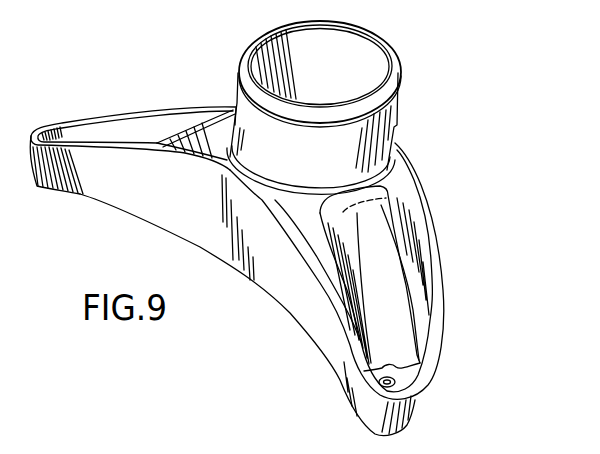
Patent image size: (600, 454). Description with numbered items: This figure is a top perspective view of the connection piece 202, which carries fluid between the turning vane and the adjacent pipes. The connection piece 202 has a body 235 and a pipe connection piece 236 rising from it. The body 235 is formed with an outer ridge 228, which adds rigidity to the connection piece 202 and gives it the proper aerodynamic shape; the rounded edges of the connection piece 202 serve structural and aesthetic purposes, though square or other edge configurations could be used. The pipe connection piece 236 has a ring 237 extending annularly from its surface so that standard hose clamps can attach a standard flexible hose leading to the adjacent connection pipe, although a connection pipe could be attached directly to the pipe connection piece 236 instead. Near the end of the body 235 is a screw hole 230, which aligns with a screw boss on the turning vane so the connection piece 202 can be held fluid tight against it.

The connection piece 202 is at (450, 191).
The outer ridge 228 is at (118, 108).
The screw hole 230 is at (397, 381).
The body 235 is at (210, 193).
The pipe connection piece 236 is at (397, 124).
The ring 237 is at (401, 87).